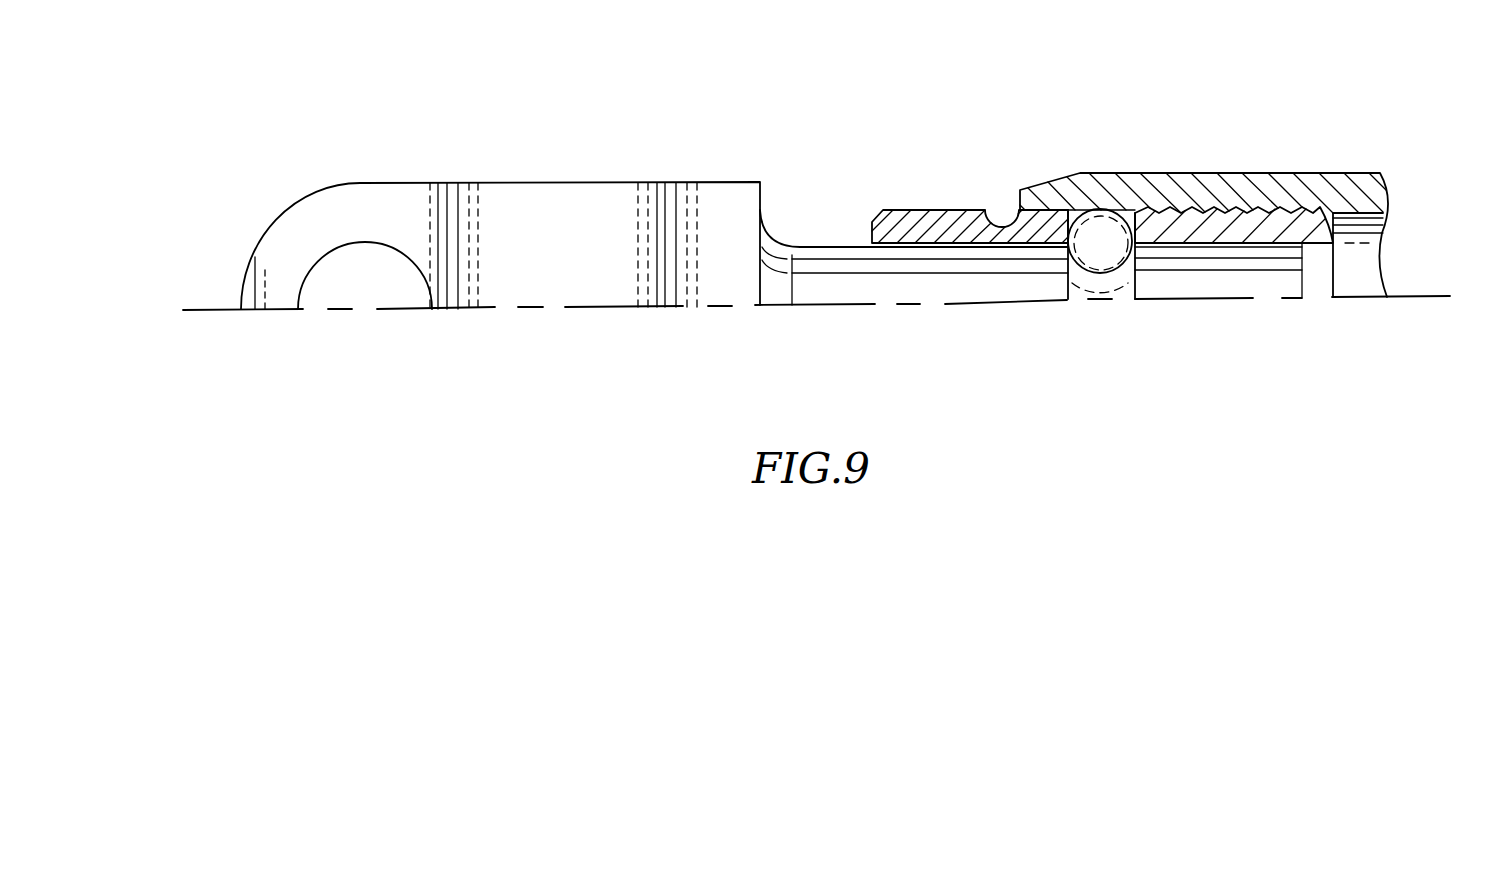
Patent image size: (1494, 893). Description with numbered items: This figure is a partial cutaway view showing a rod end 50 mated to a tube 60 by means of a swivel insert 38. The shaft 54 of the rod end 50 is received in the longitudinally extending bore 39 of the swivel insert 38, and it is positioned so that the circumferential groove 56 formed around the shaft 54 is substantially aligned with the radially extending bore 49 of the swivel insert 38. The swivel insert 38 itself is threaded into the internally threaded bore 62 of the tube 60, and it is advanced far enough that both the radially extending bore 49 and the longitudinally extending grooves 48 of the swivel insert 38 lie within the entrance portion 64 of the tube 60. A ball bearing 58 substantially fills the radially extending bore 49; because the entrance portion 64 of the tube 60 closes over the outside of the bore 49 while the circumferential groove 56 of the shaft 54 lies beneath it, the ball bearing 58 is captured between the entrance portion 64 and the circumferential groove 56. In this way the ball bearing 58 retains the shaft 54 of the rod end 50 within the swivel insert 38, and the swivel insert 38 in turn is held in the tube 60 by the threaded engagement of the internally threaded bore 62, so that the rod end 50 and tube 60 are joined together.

The rod end 50 is at (514, 119).
The shaft 54 is at (849, 245).
The swivel insert 38 is at (942, 209).
The ball bearing 58 is at (1100, 227).
The entrance portion 64 is at (1077, 207).
The radially extending bore 49 is at (1130, 210).
The tube 60 is at (1257, 172).
The internally threaded bore 62 is at (1336, 245).
The longitudinally extending grooves 48 is at (1037, 213).
The circumferential groove 56 is at (1123, 293).
The longitudinally extending bore 39 is at (1318, 280).